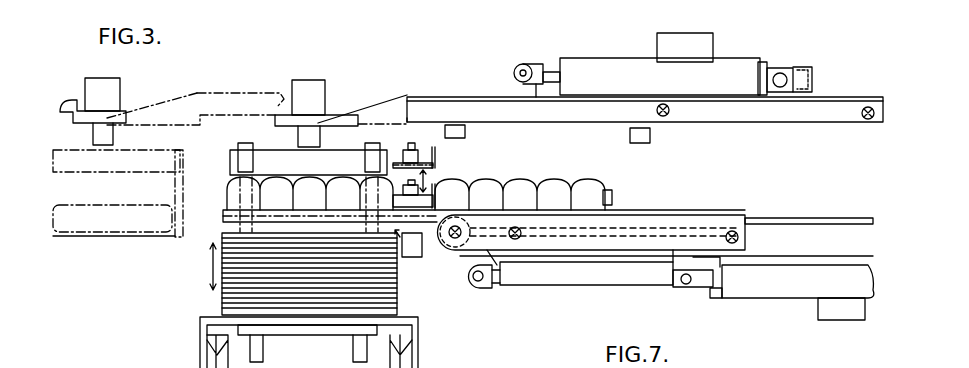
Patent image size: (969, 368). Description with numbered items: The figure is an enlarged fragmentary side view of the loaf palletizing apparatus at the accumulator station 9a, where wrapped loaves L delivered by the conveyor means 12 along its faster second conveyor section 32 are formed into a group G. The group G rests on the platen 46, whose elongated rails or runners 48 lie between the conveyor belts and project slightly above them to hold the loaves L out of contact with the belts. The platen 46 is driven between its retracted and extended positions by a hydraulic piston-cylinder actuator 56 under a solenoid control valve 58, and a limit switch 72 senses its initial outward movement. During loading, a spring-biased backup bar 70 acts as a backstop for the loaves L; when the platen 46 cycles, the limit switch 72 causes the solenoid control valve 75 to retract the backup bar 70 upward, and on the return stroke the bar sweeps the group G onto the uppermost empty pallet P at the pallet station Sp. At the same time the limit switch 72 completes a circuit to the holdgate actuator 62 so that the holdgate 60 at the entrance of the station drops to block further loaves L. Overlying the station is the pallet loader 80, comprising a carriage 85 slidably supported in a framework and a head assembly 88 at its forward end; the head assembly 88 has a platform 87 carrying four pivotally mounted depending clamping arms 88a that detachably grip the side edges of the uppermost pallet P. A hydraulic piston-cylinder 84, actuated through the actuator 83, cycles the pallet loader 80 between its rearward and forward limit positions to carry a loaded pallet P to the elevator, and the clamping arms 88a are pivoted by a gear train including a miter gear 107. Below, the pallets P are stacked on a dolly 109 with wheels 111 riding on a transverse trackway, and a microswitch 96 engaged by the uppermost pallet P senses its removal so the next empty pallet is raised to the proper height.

The miter gear 107 is at (97, 78).
The head assembly 88 is at (62, 118).
The carriage 85 is at (155, 101).
The pallet loader 80 is at (248, 93).
The piston-cylinder 84 is at (655, 82).
The actuator 83 is at (697, 33).
The platform 87 is at (80, 147).
The clamping arms 88a is at (177, 180).
The loaves L is at (108, 205).
The rails or runners 48 is at (228, 208).
The group G is at (318, 201).
The holdgate 60 is at (611, 196).
The platen 46 is at (221, 218).
The station track 9a is at (475, 210).
The backup bar 70 is at (430, 150).
The solenoid control valve 75 is at (465, 131).
The holdgate actuator 62 is at (650, 135).
The second conveyor section 32 is at (770, 218).
The conveyor means 12 is at (813, 213).
The pallet P is at (388, 275).
The microswitch 96 is at (418, 252).
The dolly 109 is at (200, 318).
The wheels 111 is at (205, 366).
The pallet station Sp is at (320, 320).
The limit switch 72 is at (717, 298).
The hydraulic piston-cylinder actuator 56 is at (789, 290).
The solenoid control valve 58 is at (842, 320).